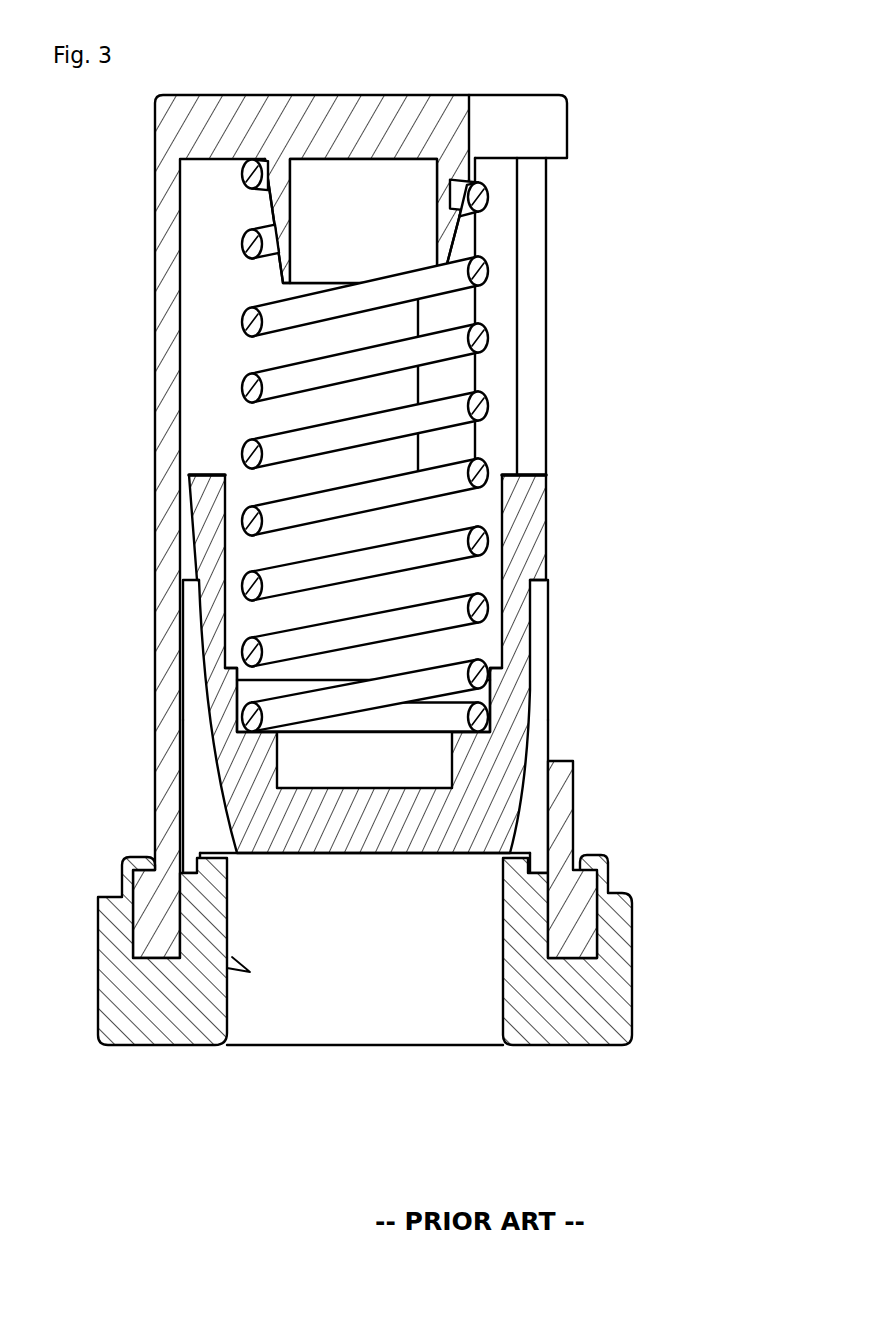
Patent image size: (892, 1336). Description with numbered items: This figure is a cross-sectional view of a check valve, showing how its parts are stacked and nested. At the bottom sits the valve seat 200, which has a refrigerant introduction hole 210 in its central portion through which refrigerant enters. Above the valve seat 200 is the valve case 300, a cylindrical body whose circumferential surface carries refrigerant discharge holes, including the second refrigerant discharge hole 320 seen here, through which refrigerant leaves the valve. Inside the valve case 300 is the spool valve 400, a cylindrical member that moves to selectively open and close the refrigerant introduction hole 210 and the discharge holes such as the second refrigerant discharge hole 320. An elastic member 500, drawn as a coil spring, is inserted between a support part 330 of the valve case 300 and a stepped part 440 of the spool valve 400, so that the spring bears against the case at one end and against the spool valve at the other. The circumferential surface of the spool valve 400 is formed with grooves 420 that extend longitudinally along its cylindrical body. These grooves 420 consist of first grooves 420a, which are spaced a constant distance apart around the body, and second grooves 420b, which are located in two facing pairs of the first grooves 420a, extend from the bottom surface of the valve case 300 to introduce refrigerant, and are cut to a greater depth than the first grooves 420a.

The valve seat 200 is at (618, 977).
The refrigerant introduction hole 210 is at (250, 972).
The valve case 300 is at (160, 286).
The second refrigerant discharge hole 320 is at (467, 372).
The support part 330 is at (272, 207).
The spool valve 400 is at (556, 525).
The grooves 420 is at (454, 726).
The first grooves 420a is at (540, 631).
The second grooves 420b is at (545, 752).
The stepped part 440 is at (235, 698).
The elastic member 500 is at (247, 388).